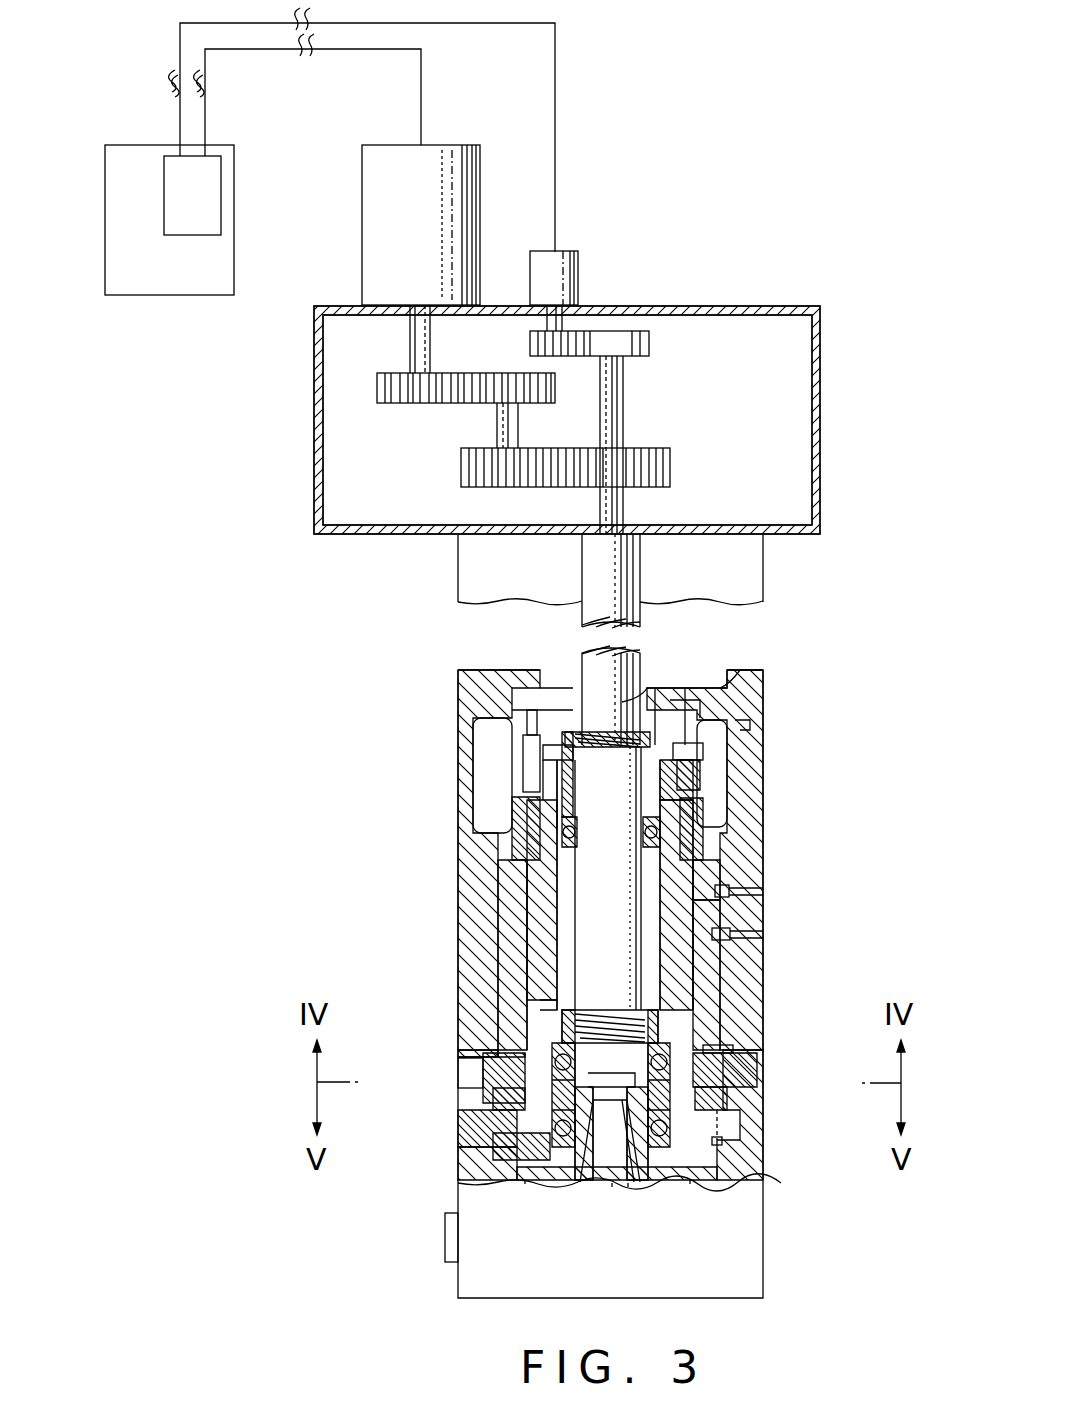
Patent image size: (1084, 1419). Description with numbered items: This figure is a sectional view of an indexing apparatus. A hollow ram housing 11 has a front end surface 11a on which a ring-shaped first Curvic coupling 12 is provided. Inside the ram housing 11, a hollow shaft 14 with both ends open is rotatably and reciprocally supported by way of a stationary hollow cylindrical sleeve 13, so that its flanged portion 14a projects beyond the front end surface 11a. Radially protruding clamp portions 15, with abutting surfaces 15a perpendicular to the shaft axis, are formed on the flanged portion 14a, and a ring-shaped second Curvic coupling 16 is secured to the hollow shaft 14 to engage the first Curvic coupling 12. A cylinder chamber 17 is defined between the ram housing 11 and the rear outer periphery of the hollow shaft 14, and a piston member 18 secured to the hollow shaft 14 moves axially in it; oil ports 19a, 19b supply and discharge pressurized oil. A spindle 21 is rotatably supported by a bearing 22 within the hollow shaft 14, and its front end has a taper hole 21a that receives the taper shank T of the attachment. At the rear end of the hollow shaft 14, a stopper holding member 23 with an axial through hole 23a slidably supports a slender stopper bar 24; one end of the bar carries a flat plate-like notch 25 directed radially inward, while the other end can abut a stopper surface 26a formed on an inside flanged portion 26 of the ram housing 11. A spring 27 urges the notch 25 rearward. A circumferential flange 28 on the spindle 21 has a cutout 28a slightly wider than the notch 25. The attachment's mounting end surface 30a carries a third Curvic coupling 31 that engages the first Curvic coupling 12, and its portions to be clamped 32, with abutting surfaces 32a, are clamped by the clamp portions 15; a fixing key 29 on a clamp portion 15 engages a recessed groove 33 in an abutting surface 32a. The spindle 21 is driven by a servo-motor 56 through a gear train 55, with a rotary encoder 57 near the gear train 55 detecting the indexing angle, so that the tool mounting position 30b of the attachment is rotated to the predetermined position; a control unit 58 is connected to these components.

The ram housing 11 is at (462, 860).
The front end surface 11a is at (745, 1073).
The first Curvic coupling 12 is at (497, 1035).
The stationary hollow cylindrical sleeve 13 is at (510, 955).
The hollow shaft 14 is at (550, 910).
The flanged portion 14a is at (690, 1183).
The protruding clamp portions 15 is at (470, 1163).
The abutting surfaces 15a is at (460, 1150).
The second Curvic coupling 16 is at (462, 1097).
The cylinder chamber 17 is at (695, 927).
The piston member 18 is at (687, 865).
The oil port 19a is at (722, 935).
The oil port 19b is at (722, 890).
The spindle 21 is at (582, 572).
The taper hole 21a is at (624, 1183).
The bearing 22 is at (580, 827).
The stopper holding member 23 is at (705, 745).
The through hole 23a is at (660, 703).
The stopper bar 24 is at (693, 717).
The notch 25 is at (705, 770).
The inside flanged portion 26 is at (753, 675).
The stopper surface 26a is at (740, 730).
The spring 27 is at (705, 790).
The circumferential flange 28 is at (550, 745).
The cutout 28a is at (540, 720).
The fixing key 29 is at (735, 1138).
The mounting end surface 30a is at (458, 1073).
The tool mounting position 30b is at (445, 1238).
The third Curvic coupling 31 is at (460, 1047).
The portions to be clamped 32 is at (459, 1113).
The abutting surfaces 32a is at (525, 1183).
The recessed groove 33 is at (735, 1118).
The gear train 55 is at (405, 403).
The servo-motor 56 is at (362, 190).
The rotary encoder 57 is at (579, 268).
The controller 58 is at (168, 296).
The taper shank T is at (598, 1183).